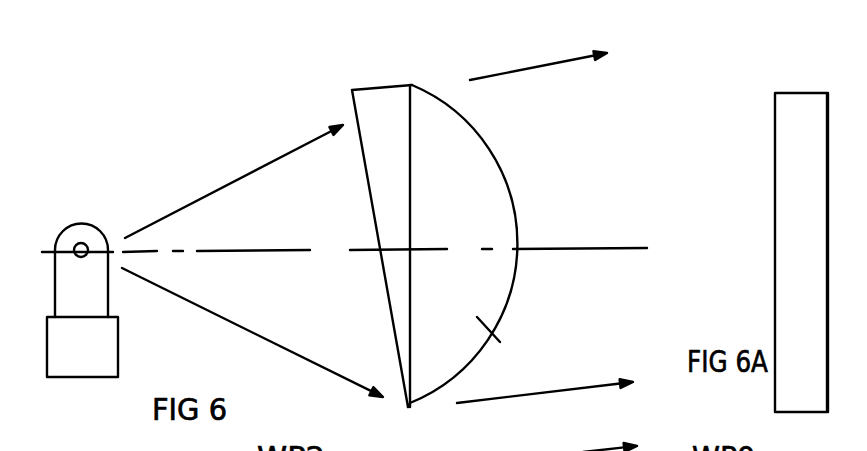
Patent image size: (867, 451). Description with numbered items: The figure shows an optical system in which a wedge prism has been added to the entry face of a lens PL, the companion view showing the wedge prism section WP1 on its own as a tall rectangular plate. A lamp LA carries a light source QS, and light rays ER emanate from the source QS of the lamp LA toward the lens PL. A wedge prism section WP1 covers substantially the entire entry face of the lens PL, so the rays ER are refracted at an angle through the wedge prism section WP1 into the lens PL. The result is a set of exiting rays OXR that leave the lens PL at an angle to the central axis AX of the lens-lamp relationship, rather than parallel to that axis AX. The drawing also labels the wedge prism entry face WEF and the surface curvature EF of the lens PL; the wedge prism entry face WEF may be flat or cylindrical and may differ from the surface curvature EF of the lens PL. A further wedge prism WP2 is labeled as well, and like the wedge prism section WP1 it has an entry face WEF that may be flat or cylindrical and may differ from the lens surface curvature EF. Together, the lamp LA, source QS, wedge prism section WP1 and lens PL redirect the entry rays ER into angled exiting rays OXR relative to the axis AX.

In FIG. 6, the lamp LA is at (113, 297).
In FIG. 6, the light source QS is at (85, 238).
In FIG. 6, the central axis AX is at (361, 252).
In FIG. 6, the light rays ER is at (220, 313).
In FIG. 6, the wedge prism WP2 is at (380, 98).
In FIG. 6, the wedge prism entry face WEF is at (378, 257).
In FIG. 6, the surface curvature EF is at (437, 93).
In FIG. 6, the lens PL is at (510, 346).
In FIG. 6, the exiting rays OXR is at (557, 65).
In FIG. 6A, the wedge prism section WP1 is at (813, 270).